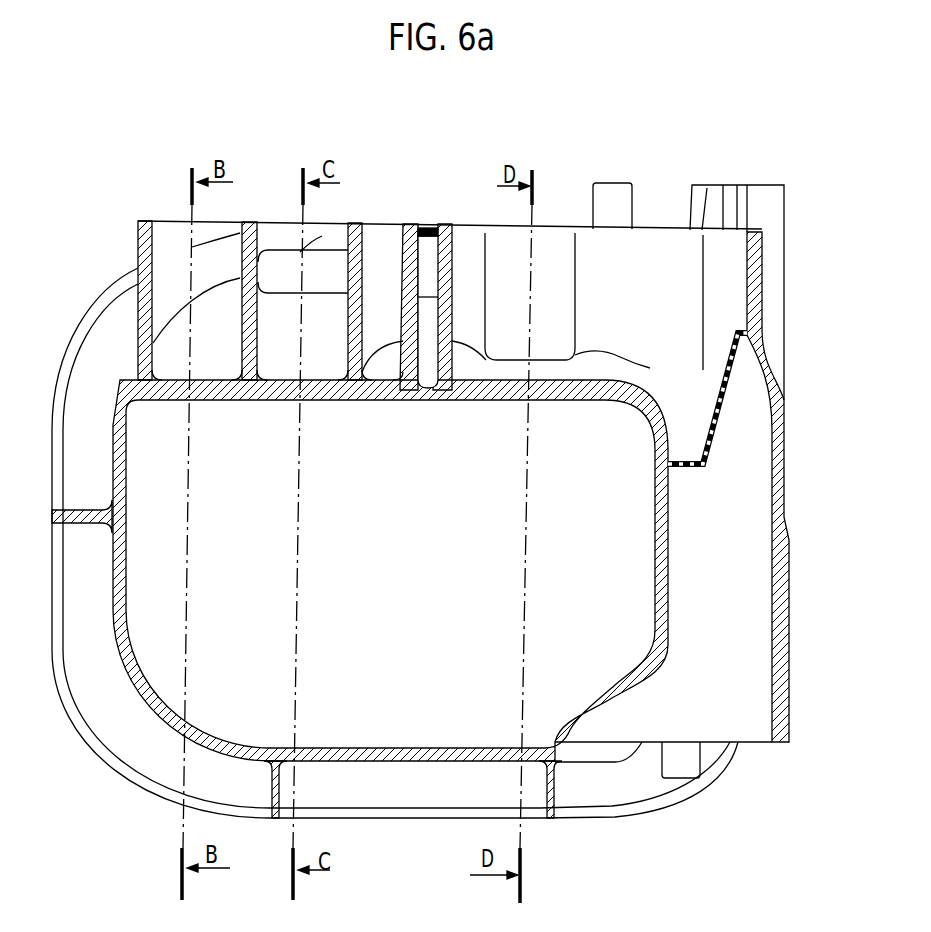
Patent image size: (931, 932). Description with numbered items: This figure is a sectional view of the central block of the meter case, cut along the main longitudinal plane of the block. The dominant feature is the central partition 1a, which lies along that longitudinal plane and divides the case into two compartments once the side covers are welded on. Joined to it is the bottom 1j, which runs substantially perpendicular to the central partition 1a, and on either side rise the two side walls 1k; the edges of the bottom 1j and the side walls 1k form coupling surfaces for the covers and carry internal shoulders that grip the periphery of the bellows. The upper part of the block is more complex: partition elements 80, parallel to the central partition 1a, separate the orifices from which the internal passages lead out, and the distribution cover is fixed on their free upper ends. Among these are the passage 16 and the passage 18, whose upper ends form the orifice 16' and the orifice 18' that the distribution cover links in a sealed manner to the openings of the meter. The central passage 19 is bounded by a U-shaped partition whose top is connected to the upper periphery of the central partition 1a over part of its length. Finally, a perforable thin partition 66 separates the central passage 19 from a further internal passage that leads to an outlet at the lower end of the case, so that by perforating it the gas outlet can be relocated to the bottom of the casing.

The central partition 1a is at (423, 576).
The side walls 1k is at (120, 575).
The bottom 1j is at (410, 749).
The partition elements 80 is at (138, 233).
The passage 18 is at (197, 351).
The orifice 18' is at (216, 259).
The passage 16 is at (302, 315).
The orifice 16' is at (342, 214).
The central passage 19 is at (392, 324).
The perforable thin partition 66 is at (717, 398).